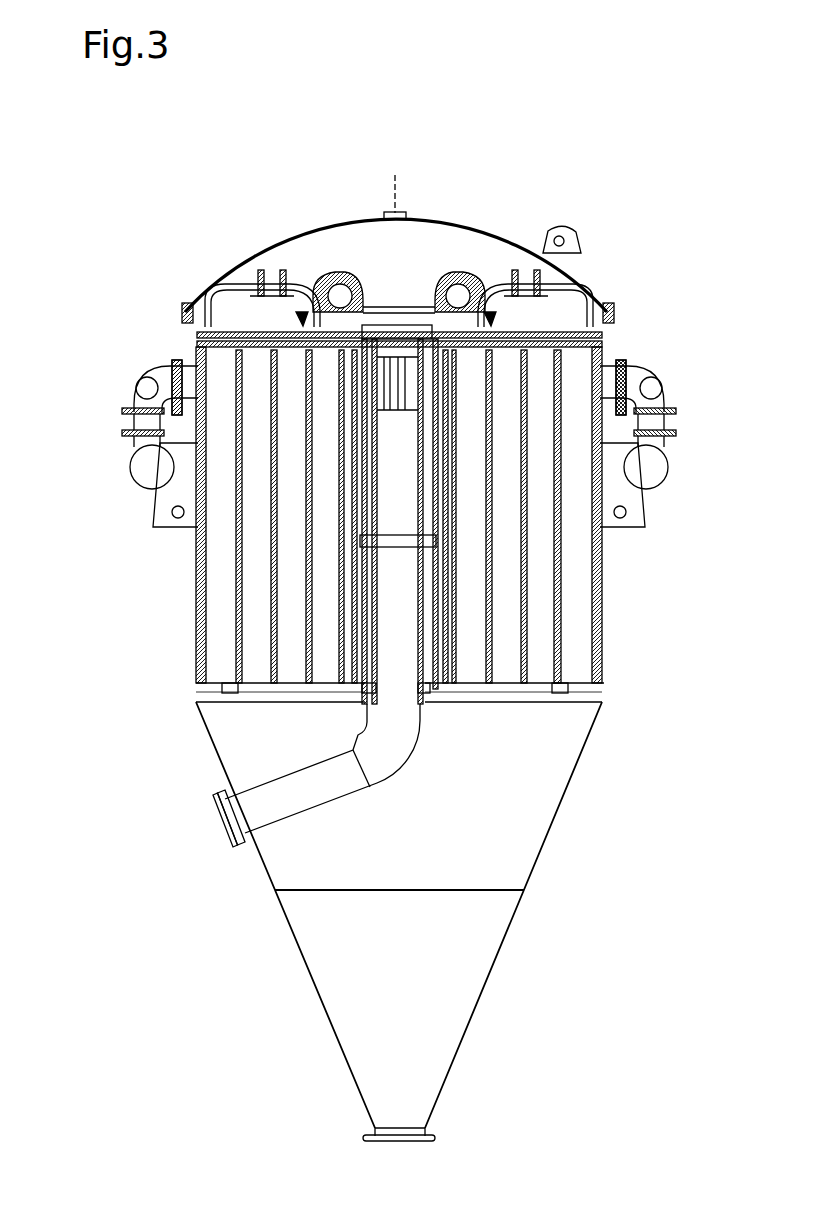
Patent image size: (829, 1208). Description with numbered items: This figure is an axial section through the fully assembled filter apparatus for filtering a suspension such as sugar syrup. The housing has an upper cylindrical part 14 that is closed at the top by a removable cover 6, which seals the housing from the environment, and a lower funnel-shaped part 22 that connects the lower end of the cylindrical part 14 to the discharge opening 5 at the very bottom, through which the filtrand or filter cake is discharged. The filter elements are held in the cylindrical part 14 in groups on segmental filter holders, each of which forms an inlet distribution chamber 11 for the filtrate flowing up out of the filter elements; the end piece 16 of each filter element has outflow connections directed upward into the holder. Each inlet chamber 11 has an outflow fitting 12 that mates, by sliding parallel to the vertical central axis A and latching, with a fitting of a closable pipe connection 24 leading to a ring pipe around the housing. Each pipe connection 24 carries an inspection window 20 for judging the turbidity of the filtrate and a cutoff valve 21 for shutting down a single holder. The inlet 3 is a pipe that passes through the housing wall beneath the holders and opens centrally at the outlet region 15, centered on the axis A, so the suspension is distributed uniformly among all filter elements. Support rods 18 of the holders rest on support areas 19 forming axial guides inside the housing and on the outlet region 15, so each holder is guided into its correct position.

The inlet 3 is at (232, 835).
The outlet 5 is at (432, 1138).
The cover 6 is at (405, 265).
The inlet distribution chamber 11 is at (347, 340).
The outflow fitting 12 is at (303, 318).
The upper cylindrical part 14 is at (610, 684).
The outlet region of the inlet pipe 15 is at (380, 417).
The end piece 16 is at (277, 357).
The support rods 18 is at (228, 688).
The support areas 19 is at (218, 700).
The inspection window 20 is at (146, 388).
The cutoff valve 21 is at (175, 378).
The lower funnel-shaped part 22 is at (495, 930).
The pipe connection 24 is at (222, 293).
The vertical central axis A is at (394, 190).